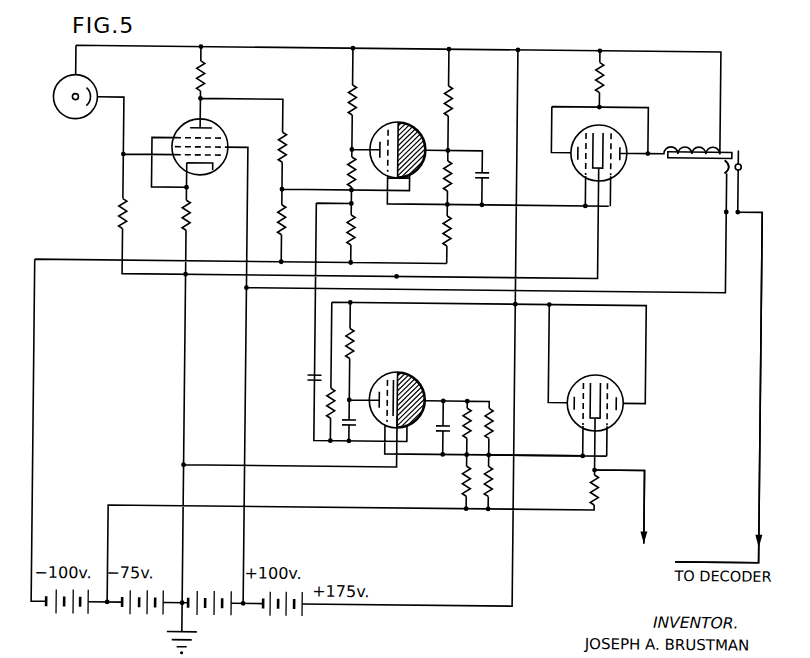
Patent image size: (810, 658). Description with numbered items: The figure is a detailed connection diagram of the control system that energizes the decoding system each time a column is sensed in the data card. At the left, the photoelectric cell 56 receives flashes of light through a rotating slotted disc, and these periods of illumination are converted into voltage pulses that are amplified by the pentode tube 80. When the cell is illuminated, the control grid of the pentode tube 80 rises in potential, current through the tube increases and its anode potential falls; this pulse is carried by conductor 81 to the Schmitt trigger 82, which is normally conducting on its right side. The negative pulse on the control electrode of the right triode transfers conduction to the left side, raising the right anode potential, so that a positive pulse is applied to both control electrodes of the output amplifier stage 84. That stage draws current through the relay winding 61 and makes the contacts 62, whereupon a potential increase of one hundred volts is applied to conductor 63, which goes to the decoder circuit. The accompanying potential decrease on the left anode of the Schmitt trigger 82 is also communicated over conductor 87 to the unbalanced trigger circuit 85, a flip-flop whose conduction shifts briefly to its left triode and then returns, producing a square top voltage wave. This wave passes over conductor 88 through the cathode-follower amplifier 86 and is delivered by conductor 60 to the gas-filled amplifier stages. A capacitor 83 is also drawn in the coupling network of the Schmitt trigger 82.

The photoelectric cell 56 is at (55, 93).
The pentode tube 80 is at (211, 134).
The conductor 81 is at (281, 131).
The Schmitt trigger 82 is at (402, 128).
The capacitor 83 is at (481, 205).
The output amplifier stage 84 is at (586, 131).
The relay winding 61 is at (695, 146).
The contacts 62 is at (746, 164).
The conductor 87 is at (314, 331).
The unbalanced trigger circuit 85 is at (407, 374).
The cathode-follower amplifier 86 is at (608, 381).
The conductor 88 is at (556, 453).
The conductor 60 is at (647, 498).
The conductor 63 is at (761, 483).